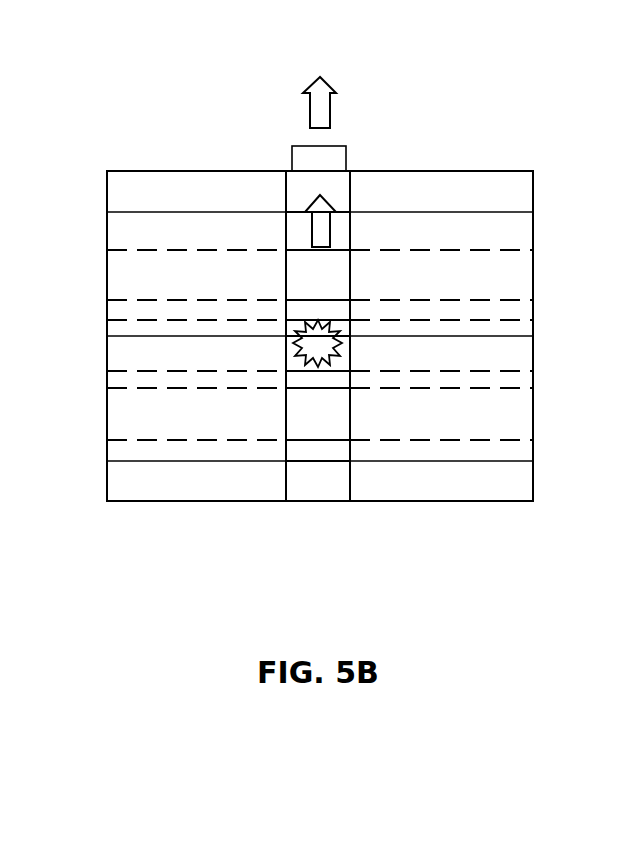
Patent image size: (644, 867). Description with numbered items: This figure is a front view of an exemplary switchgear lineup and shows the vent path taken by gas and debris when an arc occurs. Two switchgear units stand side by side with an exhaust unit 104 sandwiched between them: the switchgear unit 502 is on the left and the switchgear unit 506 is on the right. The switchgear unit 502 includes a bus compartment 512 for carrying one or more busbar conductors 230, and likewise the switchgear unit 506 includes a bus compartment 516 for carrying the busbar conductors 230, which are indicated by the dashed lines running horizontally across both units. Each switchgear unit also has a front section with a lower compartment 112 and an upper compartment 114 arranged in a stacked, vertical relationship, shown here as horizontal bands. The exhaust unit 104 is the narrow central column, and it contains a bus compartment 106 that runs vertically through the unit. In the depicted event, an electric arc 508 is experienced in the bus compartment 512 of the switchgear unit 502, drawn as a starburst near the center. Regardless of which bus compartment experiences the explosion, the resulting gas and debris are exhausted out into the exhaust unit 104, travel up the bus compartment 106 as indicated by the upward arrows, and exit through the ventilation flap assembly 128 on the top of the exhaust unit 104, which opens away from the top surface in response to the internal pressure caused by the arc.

The switchgear unit 502 is at (134, 525).
The switchgear unit 506 is at (492, 522).
The exhaust unit 104 is at (318, 510).
The bus compartment 106 is at (340, 383).
The bus compartment 512 is at (158, 200).
The bus compartment 516 is at (402, 204).
The busbar conductors 230 is at (473, 240).
The upper compartment 114 is at (107, 250).
The lower compartment 112 is at (107, 368).
The electric arc 508 is at (312, 313).
The ventilation flap assembly 128 is at (337, 146).